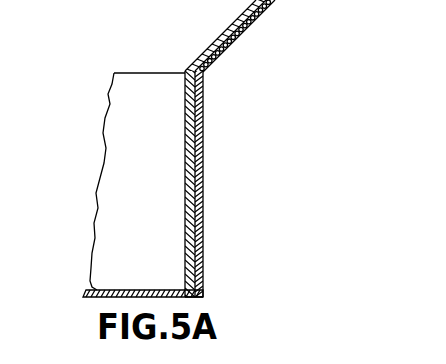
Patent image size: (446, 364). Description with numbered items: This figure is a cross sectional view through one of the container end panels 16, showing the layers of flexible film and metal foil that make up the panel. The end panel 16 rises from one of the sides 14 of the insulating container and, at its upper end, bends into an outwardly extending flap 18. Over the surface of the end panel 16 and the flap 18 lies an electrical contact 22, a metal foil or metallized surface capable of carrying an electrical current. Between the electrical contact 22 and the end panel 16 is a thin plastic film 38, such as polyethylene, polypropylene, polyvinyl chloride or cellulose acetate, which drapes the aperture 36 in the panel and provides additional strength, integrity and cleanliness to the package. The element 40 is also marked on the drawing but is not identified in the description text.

The sides 14 is at (98, 288).
The end panel 16 is at (198, 284).
The outwardly extending flap 18 is at (256, 20).
The electrical contact 22 is at (231, 25).
The aperture 36 is at (200, 190).
The plastic film 38 is at (196, 125).
The upper member 40 is at (106, 4).